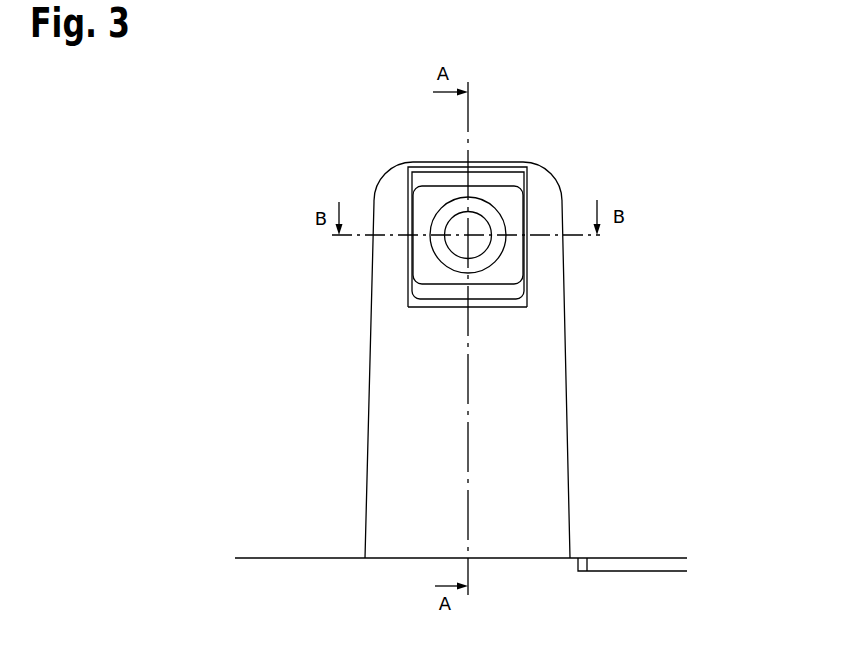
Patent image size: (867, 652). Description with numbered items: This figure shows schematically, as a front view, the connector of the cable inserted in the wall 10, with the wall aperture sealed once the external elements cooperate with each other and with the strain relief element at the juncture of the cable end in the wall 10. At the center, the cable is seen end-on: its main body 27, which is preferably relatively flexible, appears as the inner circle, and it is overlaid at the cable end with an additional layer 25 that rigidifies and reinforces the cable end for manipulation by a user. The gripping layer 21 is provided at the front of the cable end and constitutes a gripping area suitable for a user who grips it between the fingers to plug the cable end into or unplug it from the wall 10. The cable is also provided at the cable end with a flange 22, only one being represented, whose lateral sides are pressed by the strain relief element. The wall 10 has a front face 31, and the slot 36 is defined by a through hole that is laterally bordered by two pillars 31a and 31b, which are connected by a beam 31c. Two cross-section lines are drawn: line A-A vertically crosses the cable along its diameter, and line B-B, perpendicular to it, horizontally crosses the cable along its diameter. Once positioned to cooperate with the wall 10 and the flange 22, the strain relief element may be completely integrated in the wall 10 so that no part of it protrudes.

The wall 10 is at (655, 350).
The gripping layer 21 is at (505, 193).
The flange 22 is at (500, 177).
The additional layer 25 is at (504, 222).
The main body 27 is at (488, 218).
The front face 31 is at (528, 353).
The pillar 31a is at (542, 282).
The pillar 31b is at (393, 264).
The beam 31c is at (447, 308).
The slot 36 is at (424, 205).